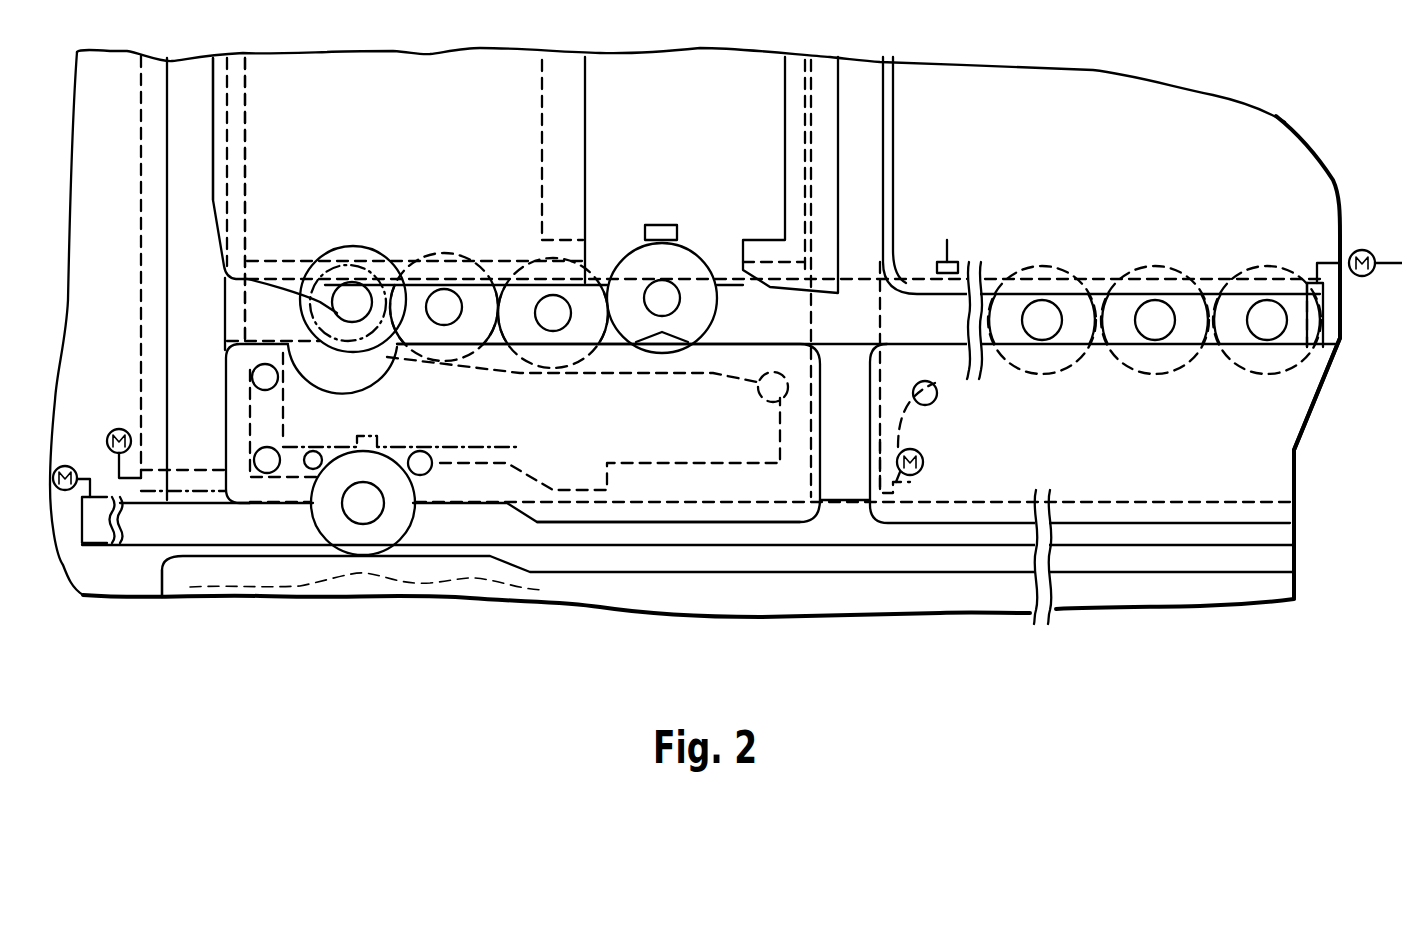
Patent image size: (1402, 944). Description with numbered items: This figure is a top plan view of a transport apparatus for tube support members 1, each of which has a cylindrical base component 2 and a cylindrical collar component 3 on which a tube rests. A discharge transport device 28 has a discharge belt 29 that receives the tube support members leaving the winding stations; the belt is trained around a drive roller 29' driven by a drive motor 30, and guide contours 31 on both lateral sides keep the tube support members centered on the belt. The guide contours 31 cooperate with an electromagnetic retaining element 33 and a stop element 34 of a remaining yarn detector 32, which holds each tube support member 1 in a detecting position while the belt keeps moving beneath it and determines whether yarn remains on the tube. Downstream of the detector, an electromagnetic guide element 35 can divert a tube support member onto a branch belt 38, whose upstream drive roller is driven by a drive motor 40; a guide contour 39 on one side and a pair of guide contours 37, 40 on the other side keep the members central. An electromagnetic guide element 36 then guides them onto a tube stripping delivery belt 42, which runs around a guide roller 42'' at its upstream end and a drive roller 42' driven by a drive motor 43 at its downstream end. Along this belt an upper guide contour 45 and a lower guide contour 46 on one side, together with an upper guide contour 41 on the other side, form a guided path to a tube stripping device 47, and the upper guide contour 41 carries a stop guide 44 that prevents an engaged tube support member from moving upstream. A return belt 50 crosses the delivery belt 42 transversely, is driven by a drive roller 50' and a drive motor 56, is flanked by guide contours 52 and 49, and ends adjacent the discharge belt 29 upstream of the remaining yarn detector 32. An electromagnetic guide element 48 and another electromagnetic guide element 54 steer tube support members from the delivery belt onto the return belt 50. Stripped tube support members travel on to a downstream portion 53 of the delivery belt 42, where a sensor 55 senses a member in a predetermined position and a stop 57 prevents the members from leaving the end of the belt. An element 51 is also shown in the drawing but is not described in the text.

The tube support member 1 is at (699, 257).
The cylindrical base component 2 is at (694, 274).
The cylindrical collar component 3 is at (656, 290).
The discharge transport device 28 is at (864, 562).
The discharge belt 29 is at (144, 583).
The drive roller 29' is at (104, 541).
The drive motor 30 is at (72, 465).
The guide contours 31 is at (667, 523).
The remaining yarn detector 32 is at (404, 439).
The electromagnetic retaining element 33 is at (438, 458).
The stop element 34 is at (318, 453).
The electromagnetic guide element 35 is at (280, 452).
The electromagnetic guide element 36 is at (283, 388).
The guide contour 37 is at (224, 407).
The branch belt 38 is at (209, 359).
The guide contour 39 is at (170, 323).
The drive motor 40 is at (119, 428).
The upper guide contour 41 is at (290, 304).
The tube stripping delivery belt 42 is at (792, 212).
The drive roller 42' is at (1304, 320).
The guide roller 42'' is at (279, 199).
The drive motor 43 is at (1365, 277).
The stop guide 44 is at (337, 282).
The upper guide contour 45 is at (390, 353).
The lower guide contour 46 is at (487, 372).
The tube stripping device 47 is at (676, 232).
The electromagnetic guide element 48 is at (760, 395).
The guide contour 49 is at (763, 287).
The return belt 50 is at (1059, 392).
The drive roller 50' is at (854, 466).
The guide 51 is at (903, 432).
The guide contour 52 is at (898, 190).
The downstream portion 53 is at (1100, 262).
The electromagnetic guide element 54 is at (937, 395).
The sensor 55 is at (958, 268).
The drive motor 56 is at (924, 462).
The stop 57 is at (1334, 340).